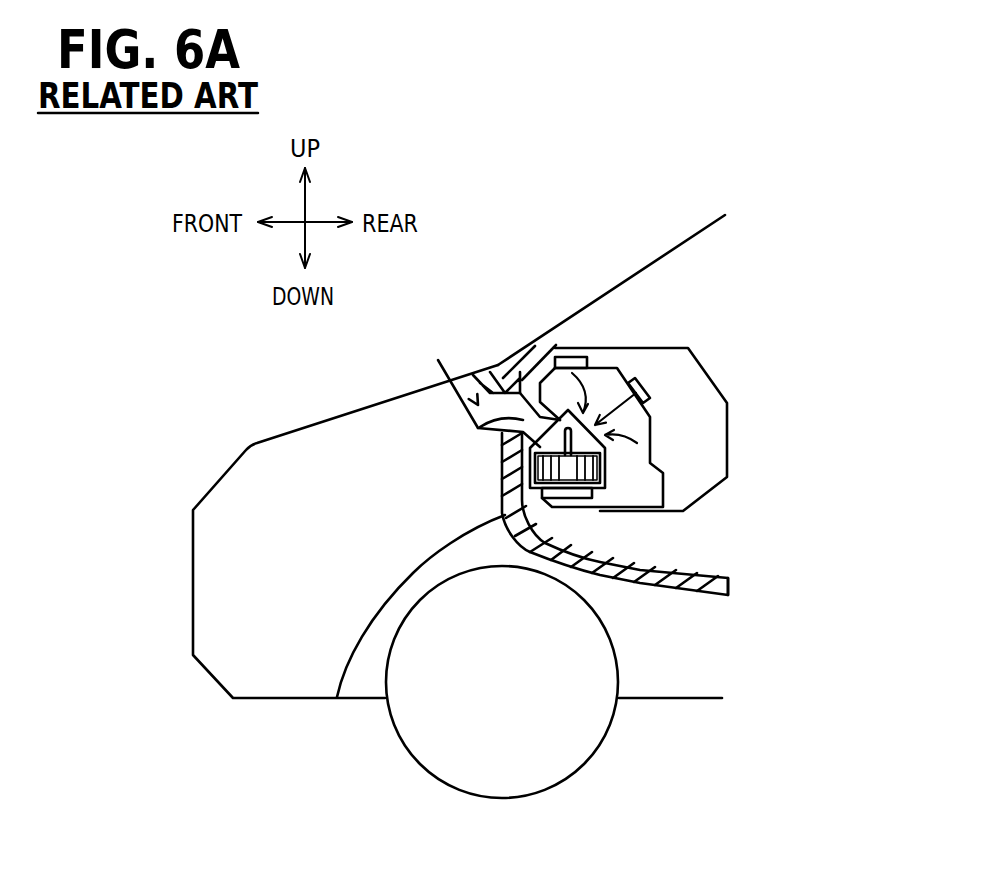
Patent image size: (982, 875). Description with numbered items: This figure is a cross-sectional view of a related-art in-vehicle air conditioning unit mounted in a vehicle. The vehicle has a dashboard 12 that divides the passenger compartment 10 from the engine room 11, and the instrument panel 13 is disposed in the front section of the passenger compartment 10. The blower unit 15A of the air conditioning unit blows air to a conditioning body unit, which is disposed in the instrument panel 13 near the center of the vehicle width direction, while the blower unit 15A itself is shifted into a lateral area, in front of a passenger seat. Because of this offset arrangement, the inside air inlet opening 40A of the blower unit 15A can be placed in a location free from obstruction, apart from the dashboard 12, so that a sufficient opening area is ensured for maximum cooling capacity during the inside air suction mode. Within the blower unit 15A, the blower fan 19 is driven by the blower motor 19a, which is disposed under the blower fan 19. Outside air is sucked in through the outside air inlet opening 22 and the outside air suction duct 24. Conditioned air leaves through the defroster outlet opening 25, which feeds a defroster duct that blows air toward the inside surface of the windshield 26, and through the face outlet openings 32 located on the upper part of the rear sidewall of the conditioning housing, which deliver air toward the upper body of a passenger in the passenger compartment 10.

The passenger compartment 10 is at (700, 543).
The engine room 11 is at (287, 521).
The dashboard 12 is at (337, 697).
The instrument panel 13 is at (697, 357).
The blower unit 15A is at (522, 472).
The blower fan 19 is at (603, 497).
The blower motor 19a is at (578, 497).
The outside air inlet opening 22 is at (478, 428).
The outside air suction duct 24 is at (450, 407).
The defroster outlet opening 25 is at (544, 332).
The windshield 26 is at (597, 283).
The face outlet openings 32 is at (643, 392).
The inside air inlet opening 40A is at (590, 425).